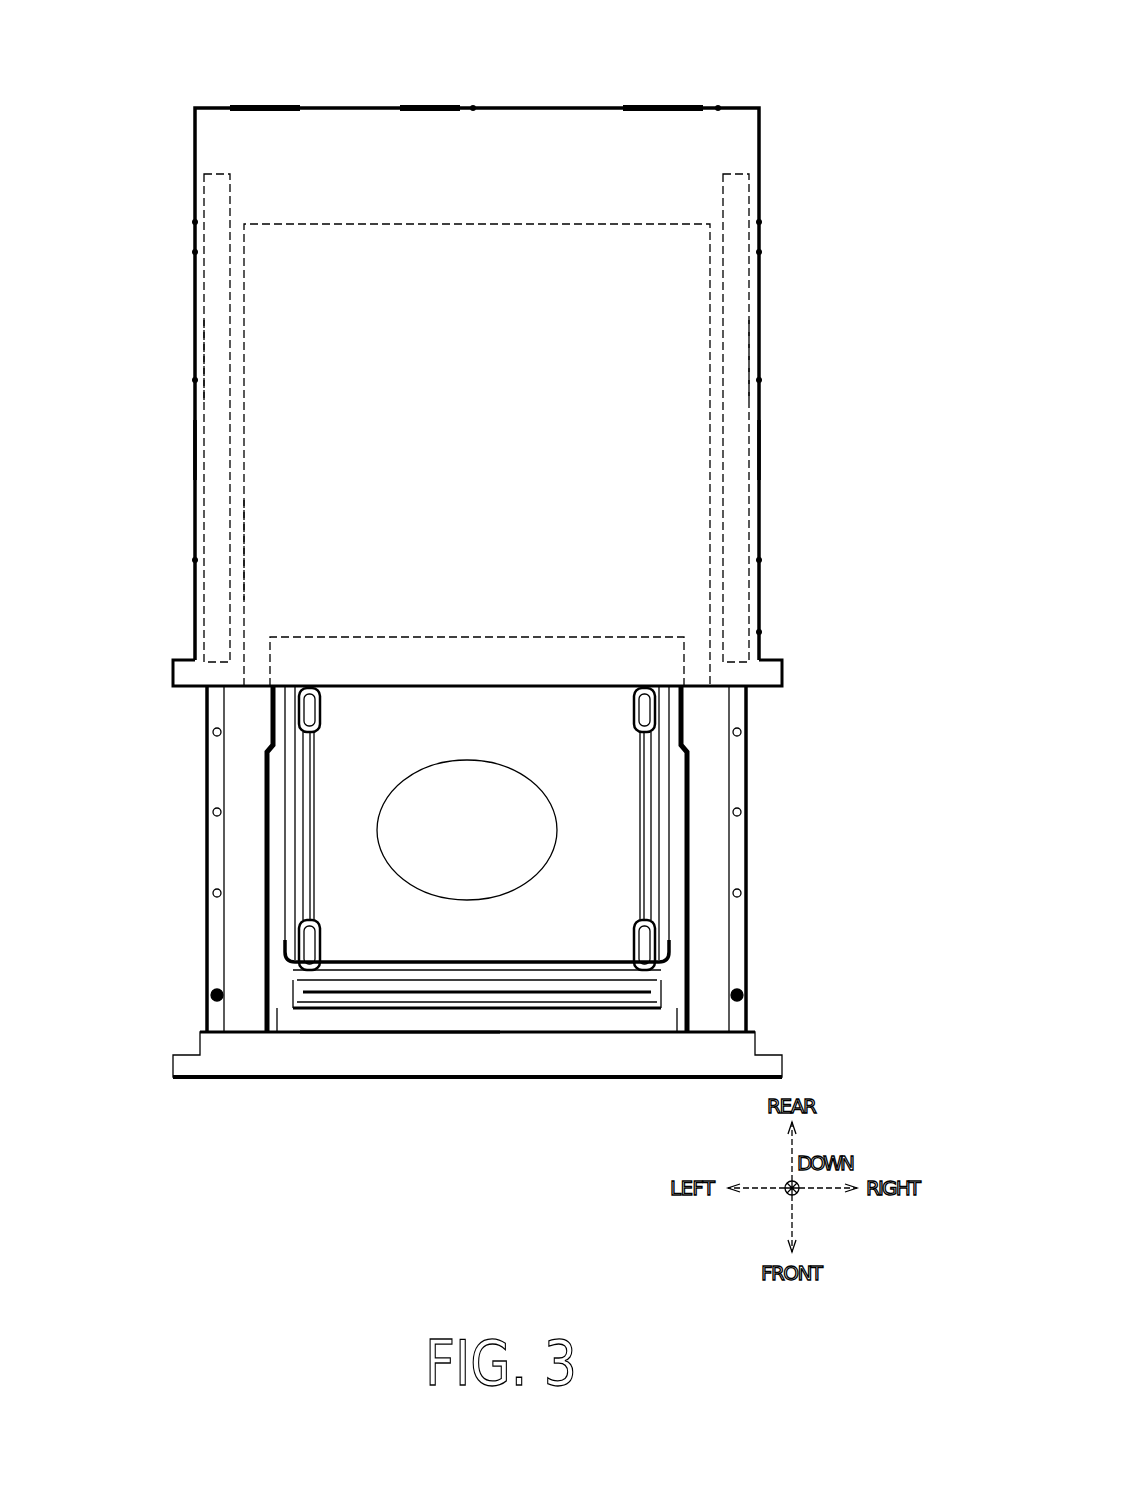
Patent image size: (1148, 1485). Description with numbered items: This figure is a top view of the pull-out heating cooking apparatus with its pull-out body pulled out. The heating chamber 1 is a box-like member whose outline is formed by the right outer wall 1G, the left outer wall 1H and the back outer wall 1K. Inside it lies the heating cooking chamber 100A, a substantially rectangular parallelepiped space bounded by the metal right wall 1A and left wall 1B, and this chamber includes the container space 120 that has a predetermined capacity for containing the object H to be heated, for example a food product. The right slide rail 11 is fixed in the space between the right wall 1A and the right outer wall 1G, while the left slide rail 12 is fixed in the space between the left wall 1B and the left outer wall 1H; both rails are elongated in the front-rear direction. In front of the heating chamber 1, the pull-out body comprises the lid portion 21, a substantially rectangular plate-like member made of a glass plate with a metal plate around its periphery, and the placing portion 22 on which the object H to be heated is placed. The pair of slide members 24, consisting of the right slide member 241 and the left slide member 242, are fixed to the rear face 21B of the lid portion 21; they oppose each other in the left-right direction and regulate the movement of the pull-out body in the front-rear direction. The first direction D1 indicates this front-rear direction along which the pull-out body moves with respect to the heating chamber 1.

The heating chamber 1 is at (673, 102).
The back outer wall 1K is at (352, 108).
The left slide rail 12 is at (204, 190).
The right slide rail 11 is at (749, 190).
The heating cooking chamber 100A is at (457, 220).
The left wall 1B is at (245, 380).
The right wall 1A is at (709, 378).
The left outer wall 1H is at (195, 452).
The right outer wall 1G is at (759, 452).
The container space 120 is at (640, 550).
The first direction D1 is at (857, 553).
The pair of slide members 24 is at (478, 859).
The left slide member 242 is at (217, 800).
The right slide member 241 is at (741, 800).
The placing portion 22 is at (700, 872).
The object to be heated H is at (468, 900).
The lid portion 21 is at (582, 1080).
The rear face 21B is at (404, 1026).